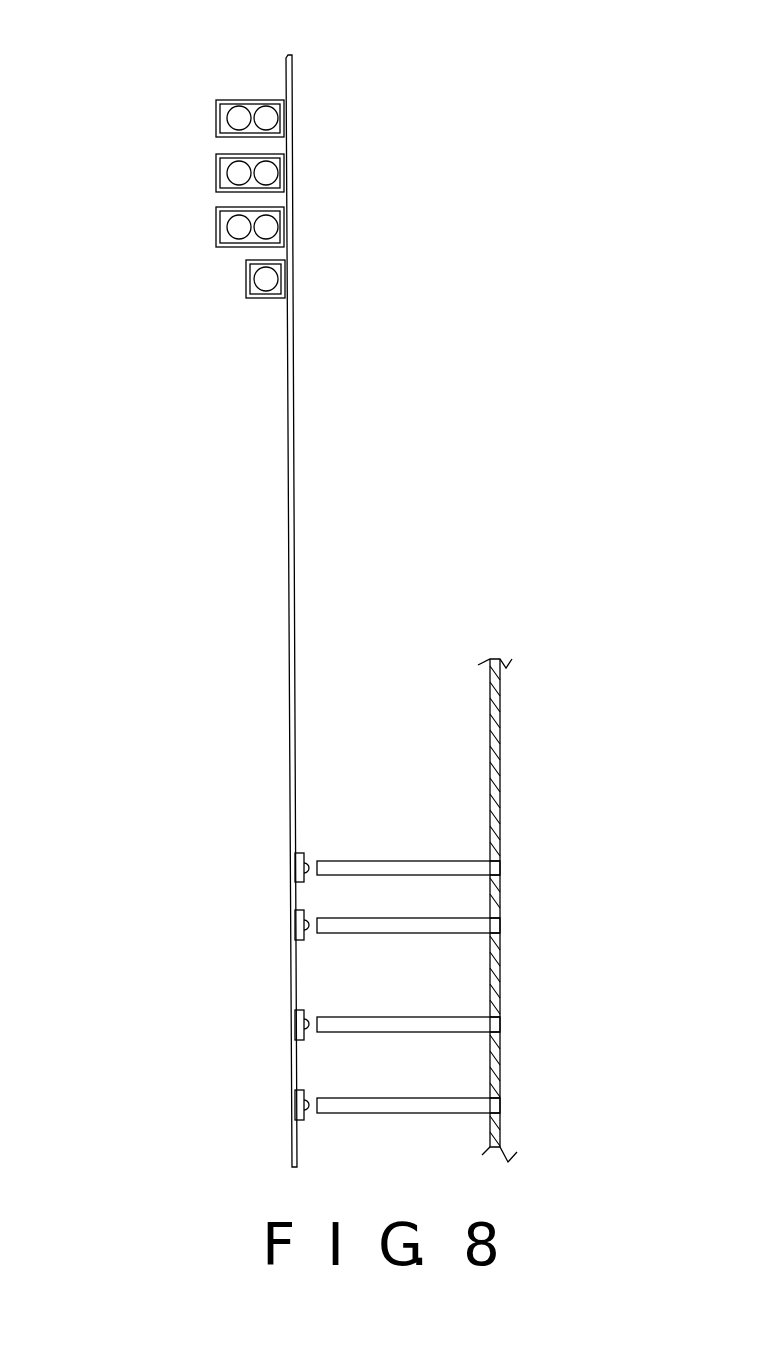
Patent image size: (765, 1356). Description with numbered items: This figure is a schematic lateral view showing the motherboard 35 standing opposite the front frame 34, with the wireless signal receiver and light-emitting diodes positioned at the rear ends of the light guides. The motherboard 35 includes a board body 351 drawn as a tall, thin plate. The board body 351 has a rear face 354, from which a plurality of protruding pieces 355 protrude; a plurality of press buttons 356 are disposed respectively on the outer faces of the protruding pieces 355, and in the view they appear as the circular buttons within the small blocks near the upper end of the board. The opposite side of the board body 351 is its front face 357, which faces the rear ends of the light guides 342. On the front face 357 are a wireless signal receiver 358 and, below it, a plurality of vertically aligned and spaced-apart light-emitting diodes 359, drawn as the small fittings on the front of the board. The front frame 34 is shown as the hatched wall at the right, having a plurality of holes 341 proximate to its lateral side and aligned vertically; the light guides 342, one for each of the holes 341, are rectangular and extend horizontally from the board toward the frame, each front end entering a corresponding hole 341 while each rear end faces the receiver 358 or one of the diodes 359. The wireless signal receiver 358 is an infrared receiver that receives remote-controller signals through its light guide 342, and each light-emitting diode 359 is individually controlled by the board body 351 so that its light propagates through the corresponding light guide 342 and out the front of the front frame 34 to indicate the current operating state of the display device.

The motherboard 35 is at (282, 85).
The board body 351 is at (289, 53).
The rear face 354 is at (286, 353).
The protruding pieces 355 is at (217, 120).
The press buttons 356 is at (267, 122).
The front face 357 is at (295, 818).
The wireless signal receiver 358 is at (302, 868).
The light-emitting diodes 359 is at (298, 1106).
The front frame 34 is at (492, 787).
The holes 341 is at (498, 1102).
The light guides 342 is at (415, 922).